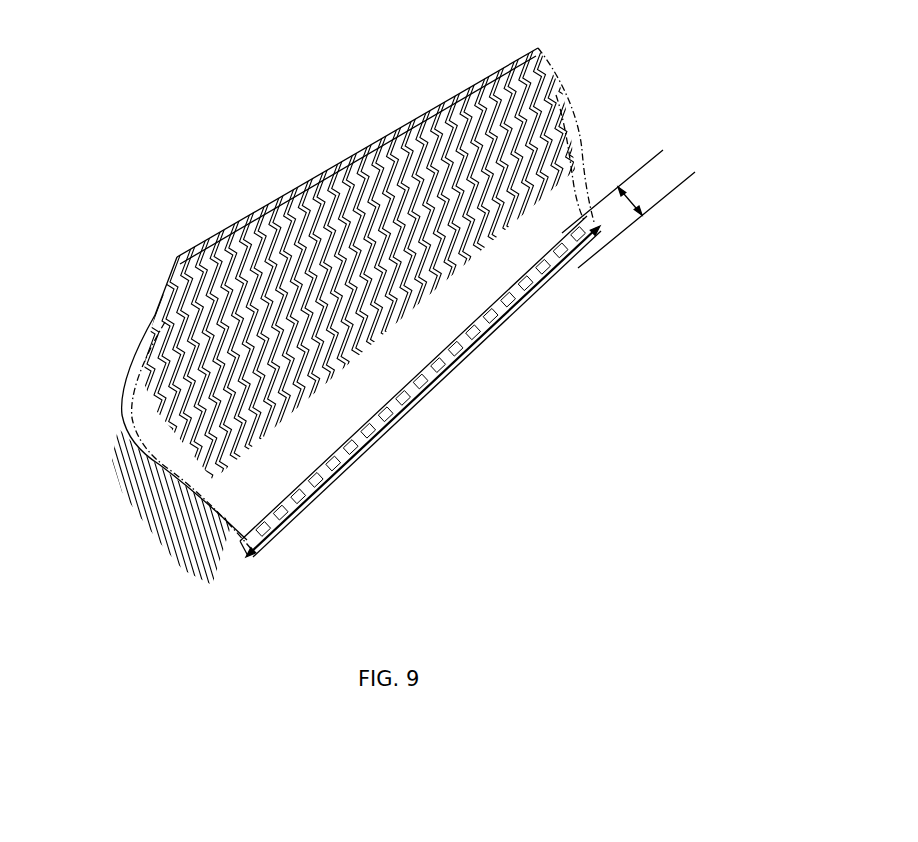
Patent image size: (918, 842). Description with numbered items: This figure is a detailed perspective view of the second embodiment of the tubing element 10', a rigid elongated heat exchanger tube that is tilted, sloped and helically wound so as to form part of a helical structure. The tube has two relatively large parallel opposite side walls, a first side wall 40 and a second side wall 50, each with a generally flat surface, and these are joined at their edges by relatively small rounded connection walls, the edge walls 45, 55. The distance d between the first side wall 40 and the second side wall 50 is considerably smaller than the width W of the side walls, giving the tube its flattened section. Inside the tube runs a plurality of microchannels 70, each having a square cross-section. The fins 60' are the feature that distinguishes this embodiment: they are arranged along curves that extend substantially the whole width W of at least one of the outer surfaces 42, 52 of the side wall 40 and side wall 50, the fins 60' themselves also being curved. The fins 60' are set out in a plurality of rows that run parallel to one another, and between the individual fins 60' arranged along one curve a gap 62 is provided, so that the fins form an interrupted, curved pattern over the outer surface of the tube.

The tubing element 10' is at (68, 147).
The first side wall 40 is at (242, 510).
The outer surface of first side wall 42 is at (560, 217).
The edge wall 45 is at (568, 177).
The second side wall 50 is at (580, 257).
The outer surface of second side wall 52 is at (508, 323).
The edge wall 55 is at (177, 483).
The fins 60' is at (398, 284).
The gap 62 is at (255, 437).
The microchannels 70 is at (442, 353).
The width W is at (435, 385).
The distance d is at (636, 217).